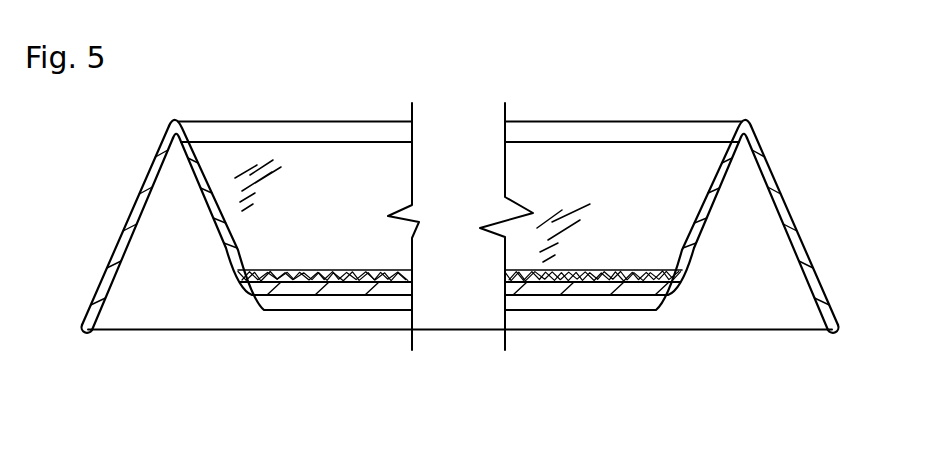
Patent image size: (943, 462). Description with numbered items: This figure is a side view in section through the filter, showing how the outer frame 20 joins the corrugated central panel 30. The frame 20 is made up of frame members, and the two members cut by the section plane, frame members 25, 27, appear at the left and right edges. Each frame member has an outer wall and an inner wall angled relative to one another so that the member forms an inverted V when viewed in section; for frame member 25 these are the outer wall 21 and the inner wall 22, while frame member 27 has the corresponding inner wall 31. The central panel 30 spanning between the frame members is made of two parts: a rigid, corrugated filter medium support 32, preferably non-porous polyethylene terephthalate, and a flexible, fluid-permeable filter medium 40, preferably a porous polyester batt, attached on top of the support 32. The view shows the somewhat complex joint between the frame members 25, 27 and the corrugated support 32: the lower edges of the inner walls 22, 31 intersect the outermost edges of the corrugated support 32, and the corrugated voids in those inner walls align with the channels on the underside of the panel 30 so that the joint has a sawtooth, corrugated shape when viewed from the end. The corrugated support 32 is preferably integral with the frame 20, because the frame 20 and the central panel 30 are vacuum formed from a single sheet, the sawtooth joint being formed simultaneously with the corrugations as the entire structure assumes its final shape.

The outer frame 20 is at (803, 103).
The outer wall 21 is at (798, 258).
The inner wall 22 is at (693, 255).
The frame member 25 is at (795, 210).
The frame member 27 is at (120, 222).
The corrugated central panel 30 is at (588, 195).
The inner wall 31 is at (222, 242).
The corrugated filter medium support 32 is at (305, 297).
The filter medium 40 is at (657, 270).